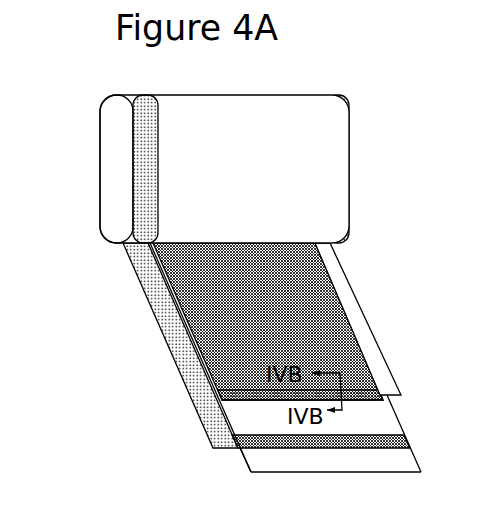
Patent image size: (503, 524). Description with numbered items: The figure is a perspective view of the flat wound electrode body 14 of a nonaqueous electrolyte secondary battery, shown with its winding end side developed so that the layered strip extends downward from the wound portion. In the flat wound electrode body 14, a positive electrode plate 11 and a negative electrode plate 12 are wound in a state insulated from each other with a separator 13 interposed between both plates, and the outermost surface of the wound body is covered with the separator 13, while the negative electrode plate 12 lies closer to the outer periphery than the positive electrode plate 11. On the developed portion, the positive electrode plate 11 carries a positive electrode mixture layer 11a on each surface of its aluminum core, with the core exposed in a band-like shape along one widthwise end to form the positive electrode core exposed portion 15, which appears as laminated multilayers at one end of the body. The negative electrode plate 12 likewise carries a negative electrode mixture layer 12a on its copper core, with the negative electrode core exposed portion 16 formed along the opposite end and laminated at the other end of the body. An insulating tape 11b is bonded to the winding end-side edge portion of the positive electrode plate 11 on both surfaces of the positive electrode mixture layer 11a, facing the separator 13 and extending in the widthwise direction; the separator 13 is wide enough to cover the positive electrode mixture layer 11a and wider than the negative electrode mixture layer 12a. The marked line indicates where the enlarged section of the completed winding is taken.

The positive electrode plate 11 is at (305, 265).
The positive electrode mixture layer 11a is at (303, 302).
The insulating tape 11b is at (215, 391).
The negative electrode plate 12 is at (143, 282).
The negative electrode mixture layer 12a is at (238, 440).
The separator 13 is at (182, 132).
The flat wound electrode body 14 is at (356, 147).
The positive electrode core exposed portion 15 is at (340, 198).
The negative electrode core exposed portion 16 is at (145, 168).